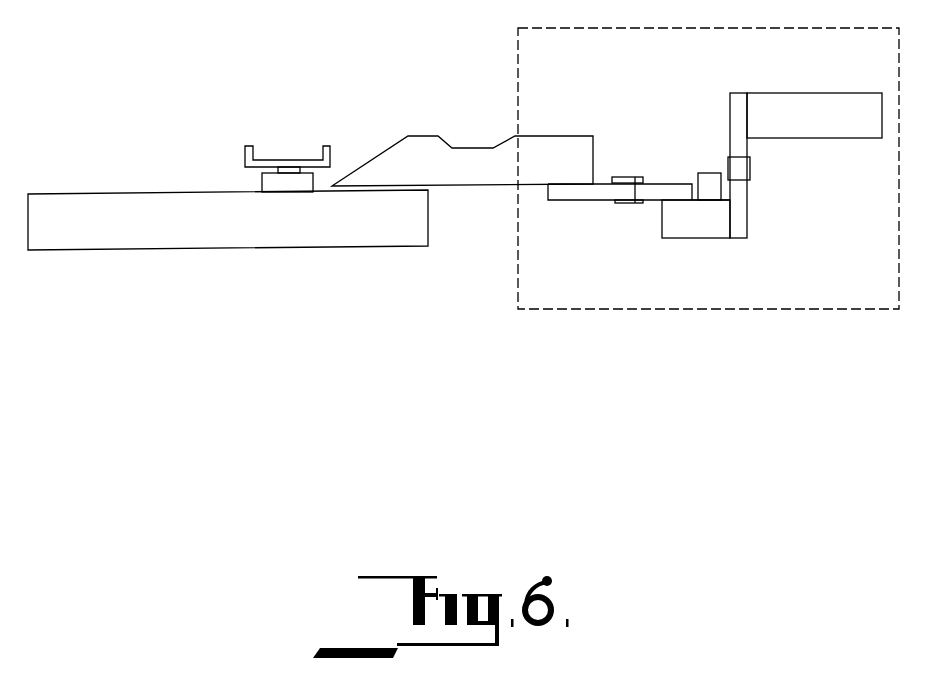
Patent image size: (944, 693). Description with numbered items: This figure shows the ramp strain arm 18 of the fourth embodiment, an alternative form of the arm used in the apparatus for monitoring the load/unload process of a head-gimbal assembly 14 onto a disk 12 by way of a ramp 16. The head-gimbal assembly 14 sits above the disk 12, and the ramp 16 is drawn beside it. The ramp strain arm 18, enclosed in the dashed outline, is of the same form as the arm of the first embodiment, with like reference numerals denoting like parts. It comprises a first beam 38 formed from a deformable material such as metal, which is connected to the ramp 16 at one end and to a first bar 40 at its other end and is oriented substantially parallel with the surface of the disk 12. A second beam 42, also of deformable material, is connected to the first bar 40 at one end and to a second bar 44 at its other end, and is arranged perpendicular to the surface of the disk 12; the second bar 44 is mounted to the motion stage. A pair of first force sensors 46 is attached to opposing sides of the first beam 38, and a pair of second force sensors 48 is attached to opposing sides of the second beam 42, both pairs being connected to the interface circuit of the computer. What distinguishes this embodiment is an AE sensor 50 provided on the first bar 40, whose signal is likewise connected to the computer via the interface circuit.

The disk 12 is at (113, 240).
The head-gimbal assembly 14 is at (244, 161).
The ramp 16 is at (418, 137).
The ramp strain arm 18 is at (518, 268).
The first beam 38 is at (573, 193).
The first bar 40 is at (713, 225).
The second beam 42 is at (742, 217).
The second bar 44 is at (790, 102).
The first force sensors 46 is at (615, 177).
The second force sensors 48 is at (752, 157).
The AE sensor 50 is at (711, 172).